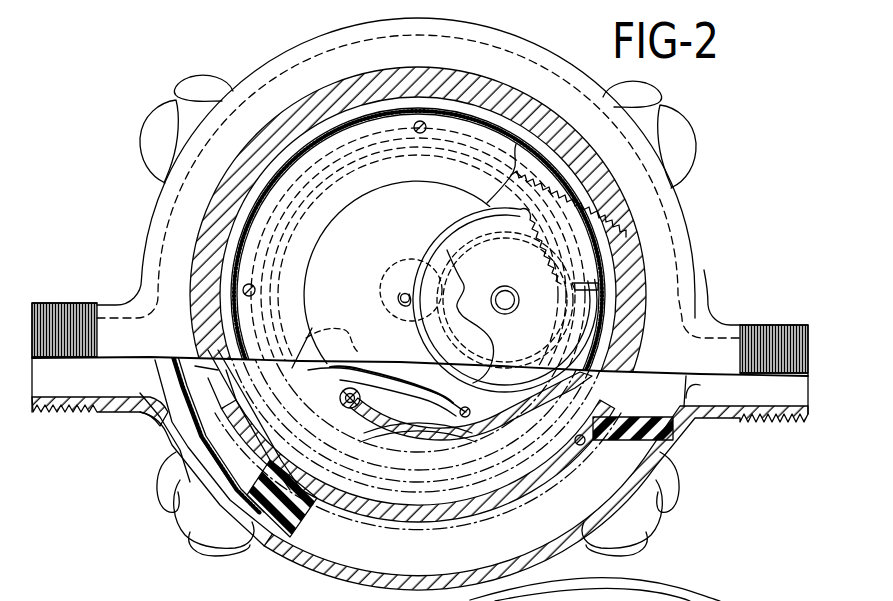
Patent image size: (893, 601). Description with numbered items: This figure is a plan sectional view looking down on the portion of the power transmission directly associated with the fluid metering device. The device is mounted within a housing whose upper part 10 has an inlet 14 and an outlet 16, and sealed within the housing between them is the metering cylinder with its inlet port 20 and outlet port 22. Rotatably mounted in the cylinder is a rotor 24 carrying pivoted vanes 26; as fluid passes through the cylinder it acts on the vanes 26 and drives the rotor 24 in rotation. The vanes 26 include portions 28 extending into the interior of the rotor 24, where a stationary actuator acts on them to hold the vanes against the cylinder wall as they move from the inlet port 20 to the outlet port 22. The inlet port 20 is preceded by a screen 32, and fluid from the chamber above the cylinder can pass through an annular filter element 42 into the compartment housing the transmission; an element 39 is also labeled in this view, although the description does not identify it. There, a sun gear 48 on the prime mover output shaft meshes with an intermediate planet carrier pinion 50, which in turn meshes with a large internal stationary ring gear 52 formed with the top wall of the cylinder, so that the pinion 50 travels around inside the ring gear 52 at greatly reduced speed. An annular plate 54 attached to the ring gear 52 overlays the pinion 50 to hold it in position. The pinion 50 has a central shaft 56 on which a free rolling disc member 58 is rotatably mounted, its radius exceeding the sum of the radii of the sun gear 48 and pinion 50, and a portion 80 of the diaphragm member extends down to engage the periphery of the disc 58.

The upper part 10 is at (237, 181).
The inlet 14 is at (105, 303).
The outlet 16 is at (763, 326).
The inlet port 20 is at (213, 373).
The outlet port 22 is at (688, 378).
The rotor 24 is at (352, 410).
The vanes 26 is at (318, 419).
The portions 28 is at (306, 369).
The screen 32 is at (183, 418).
The arm 39 is at (408, 387).
The annular filter element 42 is at (340, 140).
The sun gear 48 is at (405, 304).
The intermediate planet carrier pinion 50 is at (547, 262).
The stationary ring gear 52 is at (305, 337).
The annular plate 54 is at (412, 184).
The central shaft 56 is at (509, 312).
The free rolling disc member 58 is at (495, 281).
The portion of diaphragm member 80 is at (396, 298).